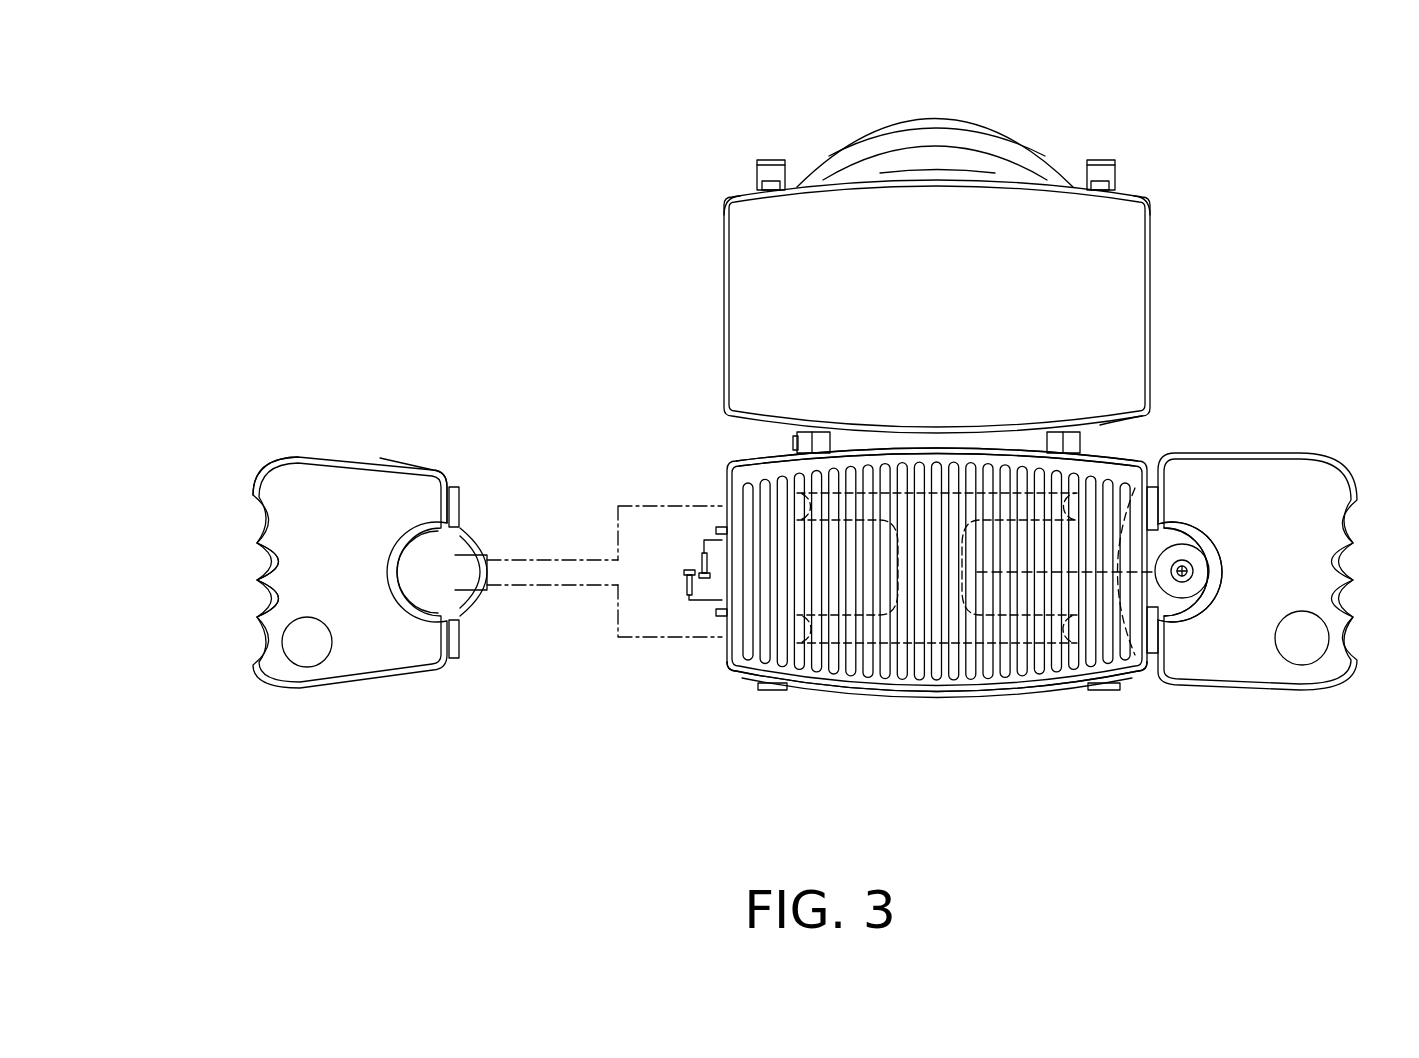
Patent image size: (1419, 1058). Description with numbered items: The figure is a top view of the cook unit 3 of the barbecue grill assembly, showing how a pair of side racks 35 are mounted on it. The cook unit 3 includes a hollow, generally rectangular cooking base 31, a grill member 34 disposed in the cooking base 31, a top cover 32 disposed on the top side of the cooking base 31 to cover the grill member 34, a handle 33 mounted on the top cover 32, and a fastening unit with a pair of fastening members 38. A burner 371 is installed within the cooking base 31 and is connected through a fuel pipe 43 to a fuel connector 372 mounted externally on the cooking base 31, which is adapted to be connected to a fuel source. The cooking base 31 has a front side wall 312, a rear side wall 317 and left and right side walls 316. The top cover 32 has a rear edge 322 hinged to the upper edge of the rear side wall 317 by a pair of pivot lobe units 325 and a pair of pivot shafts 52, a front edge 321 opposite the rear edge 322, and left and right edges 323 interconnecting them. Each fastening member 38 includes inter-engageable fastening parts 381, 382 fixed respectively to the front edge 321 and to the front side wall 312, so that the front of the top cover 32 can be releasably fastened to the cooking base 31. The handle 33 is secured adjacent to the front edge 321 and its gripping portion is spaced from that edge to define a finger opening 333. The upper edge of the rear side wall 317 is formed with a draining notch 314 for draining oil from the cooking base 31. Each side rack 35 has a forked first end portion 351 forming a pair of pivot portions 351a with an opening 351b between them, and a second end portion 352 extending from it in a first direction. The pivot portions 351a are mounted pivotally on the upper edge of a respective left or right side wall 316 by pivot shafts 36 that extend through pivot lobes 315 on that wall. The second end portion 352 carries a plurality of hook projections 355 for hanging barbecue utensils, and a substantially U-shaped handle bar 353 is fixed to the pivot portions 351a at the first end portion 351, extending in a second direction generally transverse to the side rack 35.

The cook unit 3 is at (924, 706).
The cooking base 31 is at (1005, 692).
The front side wall 312 is at (968, 695).
The draining notch 314 is at (948, 448).
The pivot lobes 315 is at (717, 530).
The left and right side walls 316 is at (727, 665).
The rear side wall 317 is at (1020, 448).
The top cover 32 is at (1188, 280).
The front edge 321 is at (990, 182).
The rear edge 322 is at (1117, 420).
The left and right edges 323 is at (722, 220).
The pivot lobe units 325 is at (790, 450).
The handle 33 is at (958, 118).
The finger opening 333 is at (903, 163).
The grill member 34 is at (835, 672).
The side racks 35 is at (449, 678).
The first end portion 351 is at (432, 500).
The pivot portions 351a is at (460, 508).
The opening 351b is at (420, 588).
The second end portion 352 is at (278, 502).
The handle bar 353 is at (490, 542).
The hook projections 355 is at (257, 543).
The pivot shafts 36 is at (690, 560).
The burner 371 is at (832, 627).
The fuel connector 372 is at (1192, 560).
The fastening members 38 is at (771, 148).
The fastening part 381 is at (1110, 172).
The fastening part 382 is at (1100, 690).
The fuel pipe 43 is at (1065, 672).
The pivot shafts 52 is at (795, 440).